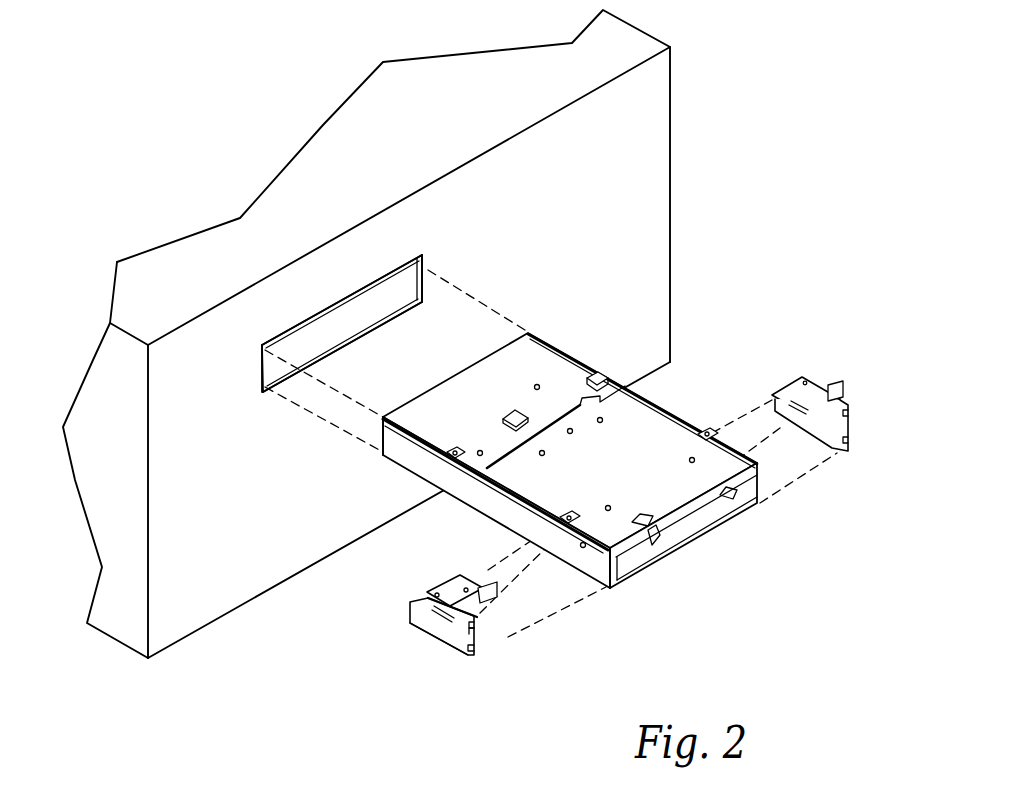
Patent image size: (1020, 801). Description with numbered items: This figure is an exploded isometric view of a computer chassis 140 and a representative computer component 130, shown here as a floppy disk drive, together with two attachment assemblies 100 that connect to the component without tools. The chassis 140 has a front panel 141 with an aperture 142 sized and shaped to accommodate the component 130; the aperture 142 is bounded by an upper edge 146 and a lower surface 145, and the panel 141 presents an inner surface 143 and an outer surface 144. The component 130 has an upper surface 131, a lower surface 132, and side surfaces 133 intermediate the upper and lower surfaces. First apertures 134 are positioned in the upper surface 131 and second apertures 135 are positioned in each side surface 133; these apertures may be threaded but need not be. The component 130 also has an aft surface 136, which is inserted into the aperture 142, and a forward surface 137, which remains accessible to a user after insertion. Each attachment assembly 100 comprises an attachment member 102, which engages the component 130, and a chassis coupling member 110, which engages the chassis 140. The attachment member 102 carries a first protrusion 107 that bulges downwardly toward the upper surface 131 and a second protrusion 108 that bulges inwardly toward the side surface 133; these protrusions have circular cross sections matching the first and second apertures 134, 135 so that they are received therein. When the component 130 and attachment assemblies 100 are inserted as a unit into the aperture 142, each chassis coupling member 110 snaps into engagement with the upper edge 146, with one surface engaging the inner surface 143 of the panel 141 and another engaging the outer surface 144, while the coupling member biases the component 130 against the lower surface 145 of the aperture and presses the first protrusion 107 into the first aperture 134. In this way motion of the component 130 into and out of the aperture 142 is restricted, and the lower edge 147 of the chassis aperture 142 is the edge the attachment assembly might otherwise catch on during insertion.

The attachment assembly 100 is at (443, 672).
The attachment member 102 is at (483, 652).
The first protrusion 107 is at (437, 595).
The second protrusion 108 is at (478, 633).
The chassis coupling member 110 is at (470, 590).
The computer component 130 is at (578, 340).
The upper surface 131 is at (627, 440).
The lower surface 132 is at (673, 552).
The side surface 133 is at (655, 405).
The first aperture 134 is at (705, 437).
The second aperture 135 is at (583, 543).
The aft surface 136 is at (384, 418).
The forward surface 137 is at (613, 578).
The computer chassis 140 is at (627, 48).
The front panel 141 is at (658, 187).
The aperture 142 is at (427, 272).
The inner surface 143 is at (338, 307).
The outer surface 144 is at (285, 327).
The lower surface 145 is at (350, 313).
The upper edge 146 is at (358, 291).
The opening bottom wall 147 is at (326, 360).